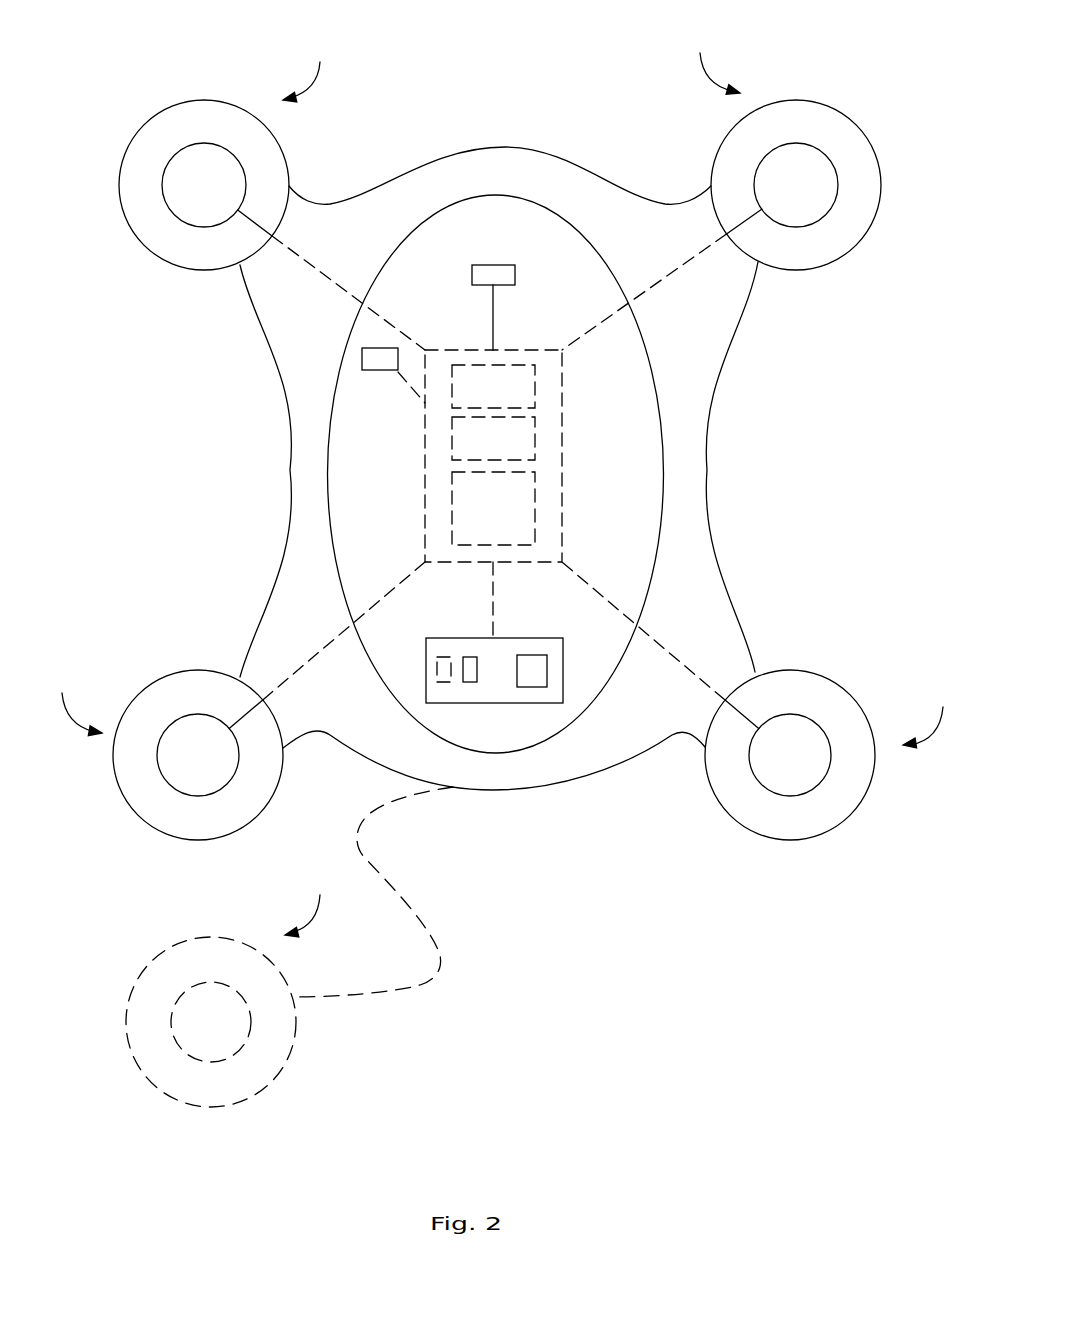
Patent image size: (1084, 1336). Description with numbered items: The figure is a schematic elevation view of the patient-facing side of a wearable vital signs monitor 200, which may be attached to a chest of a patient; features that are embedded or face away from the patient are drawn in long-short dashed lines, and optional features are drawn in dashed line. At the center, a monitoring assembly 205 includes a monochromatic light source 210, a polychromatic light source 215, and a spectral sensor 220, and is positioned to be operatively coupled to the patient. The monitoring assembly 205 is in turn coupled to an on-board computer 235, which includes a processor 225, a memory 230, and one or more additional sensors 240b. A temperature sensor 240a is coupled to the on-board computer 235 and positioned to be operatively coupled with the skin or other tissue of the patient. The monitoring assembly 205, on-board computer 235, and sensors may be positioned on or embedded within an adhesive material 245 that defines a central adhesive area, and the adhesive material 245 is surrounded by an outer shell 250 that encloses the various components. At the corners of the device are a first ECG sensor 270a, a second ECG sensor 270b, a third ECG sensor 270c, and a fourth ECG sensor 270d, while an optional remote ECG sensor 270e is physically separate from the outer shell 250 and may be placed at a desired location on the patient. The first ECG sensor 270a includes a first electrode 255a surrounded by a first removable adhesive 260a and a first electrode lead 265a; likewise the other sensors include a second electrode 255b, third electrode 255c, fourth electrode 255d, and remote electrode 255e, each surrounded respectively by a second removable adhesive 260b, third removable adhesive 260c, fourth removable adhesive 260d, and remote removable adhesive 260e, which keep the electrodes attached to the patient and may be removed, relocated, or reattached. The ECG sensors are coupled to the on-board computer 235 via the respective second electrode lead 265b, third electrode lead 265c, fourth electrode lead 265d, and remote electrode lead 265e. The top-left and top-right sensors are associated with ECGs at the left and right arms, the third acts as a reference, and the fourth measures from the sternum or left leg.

The wearable vital signs monitor 200 is at (504, 578).
The monitoring assembly 205 is at (532, 672).
The monochromatic light source 210 is at (448, 672).
The polychromatic light source 215 is at (475, 672).
The spectral sensor 220 is at (551, 705).
The processor 225 is at (452, 508).
The memory 230 is at (535, 437).
The on-board computer 235 is at (425, 425).
The temperature sensor 240a is at (515, 278).
The additional sensor 240b is at (362, 360).
The adhesive material 245 is at (469, 461).
The outer shell 250 is at (499, 468).
The first electrode 255a is at (167, 203).
The second electrode 255b is at (833, 208).
The third electrode 255c is at (820, 782).
The fourth electrode 255d is at (165, 780).
The remote electrode 255e is at (178, 1047).
The first removable adhesive 260a is at (155, 133).
The second removable adhesive 260b is at (847, 135).
The third removable adhesive 260c is at (822, 695).
The fourth removable adhesive 260d is at (155, 705).
The remote removable adhesive 260e is at (160, 980).
The first electrode lead 265a is at (313, 262).
The second electrode lead 265b is at (690, 260).
The third electrode lead 265c is at (690, 668).
The fourth electrode lead 265d is at (303, 657).
The remote electrode lead 265e is at (440, 963).
The first ECG sensor 270a is at (312, 70).
The second ECG sensor 270b is at (711, 62).
The third ECG sensor 270c is at (935, 717).
The fourth ECG sensor 270d is at (72, 705).
The remote ECG sensor 270e is at (313, 904).